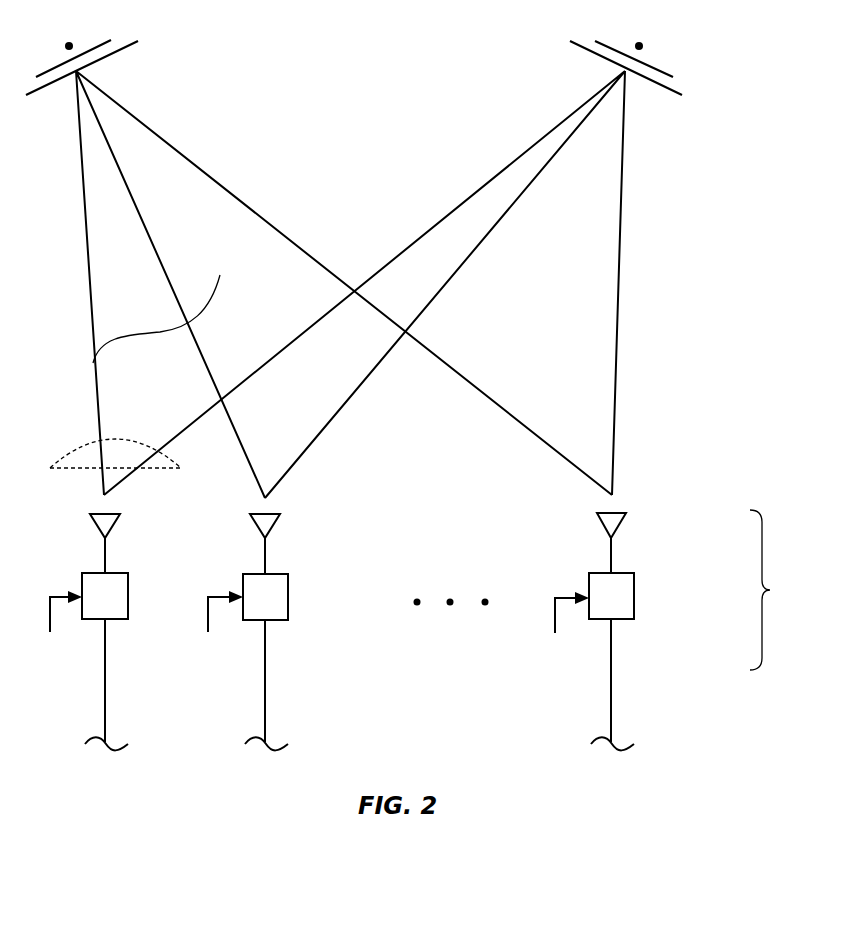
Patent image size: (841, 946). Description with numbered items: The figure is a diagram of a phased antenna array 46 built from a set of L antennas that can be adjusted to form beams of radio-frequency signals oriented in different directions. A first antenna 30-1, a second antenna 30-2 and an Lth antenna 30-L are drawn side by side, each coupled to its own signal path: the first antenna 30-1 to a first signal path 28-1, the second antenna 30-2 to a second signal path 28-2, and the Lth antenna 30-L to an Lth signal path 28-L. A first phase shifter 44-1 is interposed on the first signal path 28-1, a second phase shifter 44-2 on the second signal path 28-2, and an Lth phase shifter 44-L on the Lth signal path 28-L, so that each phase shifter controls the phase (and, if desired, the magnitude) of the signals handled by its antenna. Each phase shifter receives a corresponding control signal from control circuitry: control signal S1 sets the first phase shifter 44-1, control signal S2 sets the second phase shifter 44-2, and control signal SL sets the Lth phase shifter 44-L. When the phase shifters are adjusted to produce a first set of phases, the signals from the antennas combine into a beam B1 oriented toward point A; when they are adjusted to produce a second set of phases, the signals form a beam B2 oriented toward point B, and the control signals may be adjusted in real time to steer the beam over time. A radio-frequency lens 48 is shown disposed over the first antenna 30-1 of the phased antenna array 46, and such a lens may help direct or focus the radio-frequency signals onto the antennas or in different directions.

The point A is at (82, 58).
The point B is at (626, 58).
The beam B1 is at (270, 229).
The beam B2 is at (528, 152).
The radio-frequency lens 48 is at (125, 440).
The first antenna 30-1 is at (92, 528).
The second antenna 30-2 is at (273, 530).
The Lth antenna 30-L is at (603, 530).
The first phase shifter 44-1 is at (120, 578).
The second phase shifter 44-2 is at (288, 597).
The Lth phase shifter 44-L is at (634, 597).
The first signal path 28-1 is at (105, 692).
The second signal path 28-2 is at (265, 693).
The Lth signal path 28-L is at (611, 692).
The control signal S1 is at (61, 624).
The control signal S2 is at (223, 623).
The control signal SL is at (568, 624).
The phased antenna array 46 is at (775, 590).